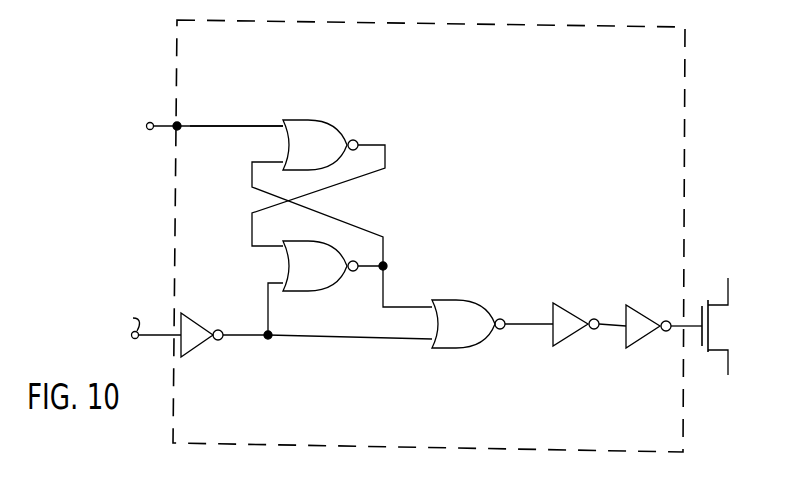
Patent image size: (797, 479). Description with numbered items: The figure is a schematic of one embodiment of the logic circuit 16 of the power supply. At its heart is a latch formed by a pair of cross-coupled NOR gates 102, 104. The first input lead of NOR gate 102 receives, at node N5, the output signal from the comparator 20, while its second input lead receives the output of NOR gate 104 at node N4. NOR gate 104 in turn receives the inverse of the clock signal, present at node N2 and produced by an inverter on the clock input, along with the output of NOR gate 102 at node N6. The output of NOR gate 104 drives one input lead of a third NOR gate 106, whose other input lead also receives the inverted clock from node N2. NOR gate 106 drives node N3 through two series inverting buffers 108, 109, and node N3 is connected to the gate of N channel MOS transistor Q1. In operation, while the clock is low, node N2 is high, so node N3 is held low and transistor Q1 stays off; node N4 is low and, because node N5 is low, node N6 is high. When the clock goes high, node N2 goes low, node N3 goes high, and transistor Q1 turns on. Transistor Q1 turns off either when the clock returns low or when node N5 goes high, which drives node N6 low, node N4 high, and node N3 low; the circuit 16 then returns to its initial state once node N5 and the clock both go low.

The logic circuit 16 is at (570, 97).
The comparator 20 is at (155, 102).
The node N5 is at (252, 93).
The NOR gate 102 is at (316, 120).
The node N6 is at (386, 146).
The NOR gate 104 is at (350, 300).
The node N4 is at (386, 265).
The node N2 is at (270, 340).
The NOR gate 106 is at (472, 300).
The inverting buffer 108 is at (571, 303).
The inverting buffer 109 is at (634, 345).
The node N3 is at (673, 319).
The N channel MOS transistor Q1 is at (722, 325).